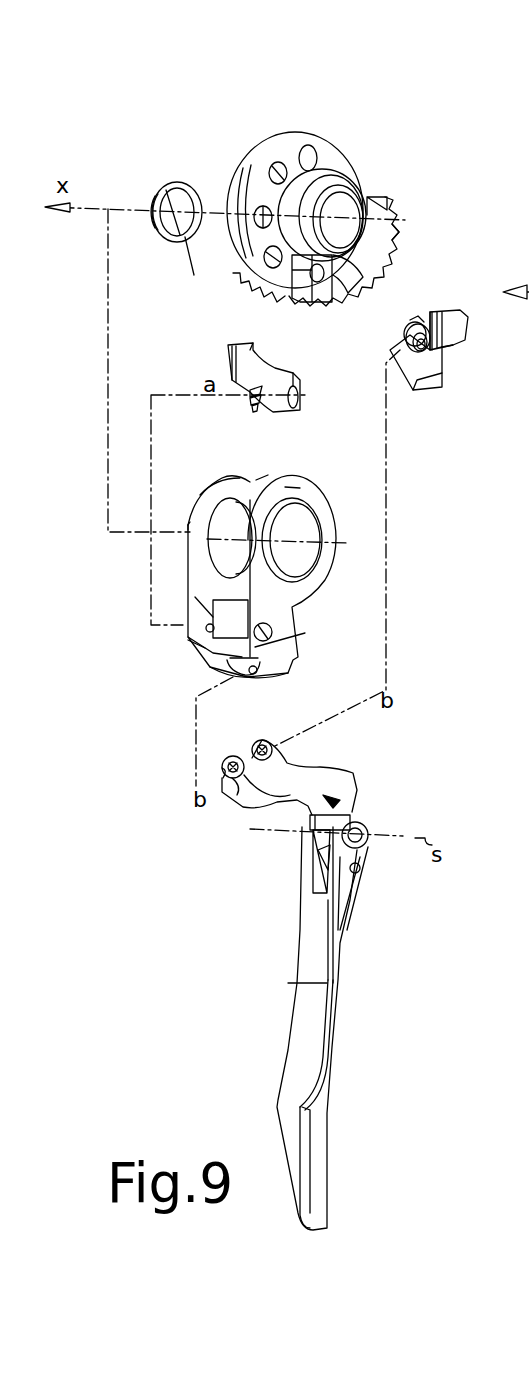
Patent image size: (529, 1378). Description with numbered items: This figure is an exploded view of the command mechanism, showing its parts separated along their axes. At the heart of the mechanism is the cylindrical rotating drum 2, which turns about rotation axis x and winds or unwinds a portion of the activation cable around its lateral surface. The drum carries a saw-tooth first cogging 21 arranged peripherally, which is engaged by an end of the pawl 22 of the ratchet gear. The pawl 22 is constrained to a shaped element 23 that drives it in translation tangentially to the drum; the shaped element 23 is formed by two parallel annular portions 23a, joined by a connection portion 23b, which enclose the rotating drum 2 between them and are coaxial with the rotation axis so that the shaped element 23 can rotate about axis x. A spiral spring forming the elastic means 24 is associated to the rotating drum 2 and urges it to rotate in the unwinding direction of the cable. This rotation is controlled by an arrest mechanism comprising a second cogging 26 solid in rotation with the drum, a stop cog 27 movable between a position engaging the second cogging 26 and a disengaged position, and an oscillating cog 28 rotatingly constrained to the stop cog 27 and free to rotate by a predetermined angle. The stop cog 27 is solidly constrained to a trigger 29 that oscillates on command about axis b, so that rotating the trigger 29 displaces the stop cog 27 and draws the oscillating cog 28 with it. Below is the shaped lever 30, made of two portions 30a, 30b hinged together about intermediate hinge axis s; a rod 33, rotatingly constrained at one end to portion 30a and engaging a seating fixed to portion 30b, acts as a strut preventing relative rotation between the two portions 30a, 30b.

The rotating drum 2 is at (275, 133).
The first cogging 21 is at (233, 262).
The pawl 22 is at (287, 384).
The shaped element 23 is at (196, 563).
The annular portions 23a is at (254, 482).
The connection portion 23b is at (210, 658).
The elastic means 24 is at (172, 184).
The second cogging 26 is at (383, 260).
The stop cog 27 is at (418, 312).
The oscillating cog 28 is at (413, 320).
The trigger 29 is at (440, 362).
The shaped lever 30 is at (275, 985).
The first portion of the shaped lever 30a is at (355, 813).
The second portion of the shaped lever 30b is at (375, 1104).
The rod 33 is at (323, 897).